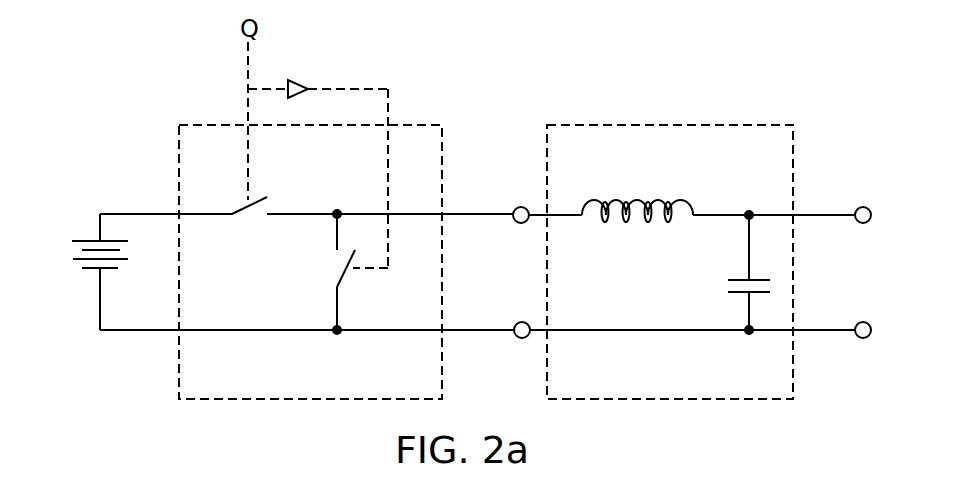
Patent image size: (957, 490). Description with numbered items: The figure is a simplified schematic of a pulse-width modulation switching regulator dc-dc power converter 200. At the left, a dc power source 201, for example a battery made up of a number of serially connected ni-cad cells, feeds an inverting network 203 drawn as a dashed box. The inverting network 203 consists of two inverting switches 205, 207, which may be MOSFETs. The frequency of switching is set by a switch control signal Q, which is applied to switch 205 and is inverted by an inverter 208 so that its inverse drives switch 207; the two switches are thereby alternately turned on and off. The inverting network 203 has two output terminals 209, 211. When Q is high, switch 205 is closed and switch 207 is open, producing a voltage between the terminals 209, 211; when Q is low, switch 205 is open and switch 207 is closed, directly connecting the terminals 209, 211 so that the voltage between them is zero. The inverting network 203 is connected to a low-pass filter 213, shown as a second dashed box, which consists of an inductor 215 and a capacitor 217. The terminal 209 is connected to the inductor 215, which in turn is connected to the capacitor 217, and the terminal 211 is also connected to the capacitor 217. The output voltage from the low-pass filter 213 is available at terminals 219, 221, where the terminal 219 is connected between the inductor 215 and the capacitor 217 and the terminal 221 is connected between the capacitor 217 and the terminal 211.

The pulse-width modulation switching regulator dc-dc power converter 200 is at (133, 51).
The dc power source 201 is at (93, 271).
The inverting network 203 is at (311, 262).
The inverting switch 205 is at (240, 215).
The inverting switch 207 is at (337, 283).
The inverter 208 is at (298, 83).
The output terminal 209 is at (515, 208).
The output terminal 211 is at (514, 337).
The low-pass filter 213 is at (670, 262).
The inductor 215 is at (646, 222).
The capacitor 217 is at (739, 278).
The terminal 219 is at (856, 207).
The terminal 221 is at (856, 336).